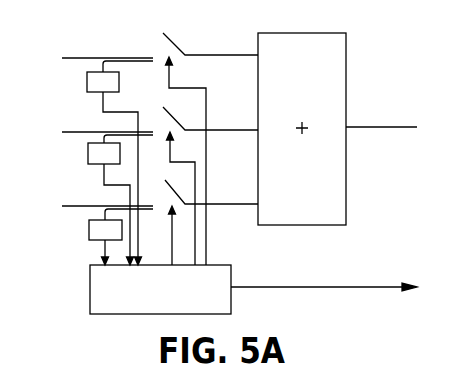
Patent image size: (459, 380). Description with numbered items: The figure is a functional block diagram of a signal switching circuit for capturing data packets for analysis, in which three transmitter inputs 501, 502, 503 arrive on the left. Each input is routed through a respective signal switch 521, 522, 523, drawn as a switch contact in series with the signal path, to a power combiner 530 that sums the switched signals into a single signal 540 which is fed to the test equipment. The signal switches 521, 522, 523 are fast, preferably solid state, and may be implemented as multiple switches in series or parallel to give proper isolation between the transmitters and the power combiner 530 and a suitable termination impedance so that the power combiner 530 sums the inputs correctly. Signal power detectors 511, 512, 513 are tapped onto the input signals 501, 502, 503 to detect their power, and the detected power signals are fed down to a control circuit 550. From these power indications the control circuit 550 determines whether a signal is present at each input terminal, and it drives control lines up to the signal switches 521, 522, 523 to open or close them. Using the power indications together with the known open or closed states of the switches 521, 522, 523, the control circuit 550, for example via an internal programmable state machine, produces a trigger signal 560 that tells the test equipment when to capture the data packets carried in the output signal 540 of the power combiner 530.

The transmitter input 501 is at (78, 57).
The transmitter input 502 is at (78, 131).
The transmitter input 503 is at (78, 205).
The signal power detector 511 is at (87, 84).
The signal power detector 512 is at (88, 156).
The signal power detector 513 is at (89, 231).
The signal switch 521 is at (175, 41).
The signal switch 522 is at (175, 115).
The signal switch 523 is at (177, 190).
The power combiner 530 is at (347, 52).
The single signal 540 is at (378, 127).
The control circuit 550 is at (178, 300).
The trigger signal 560 is at (380, 285).